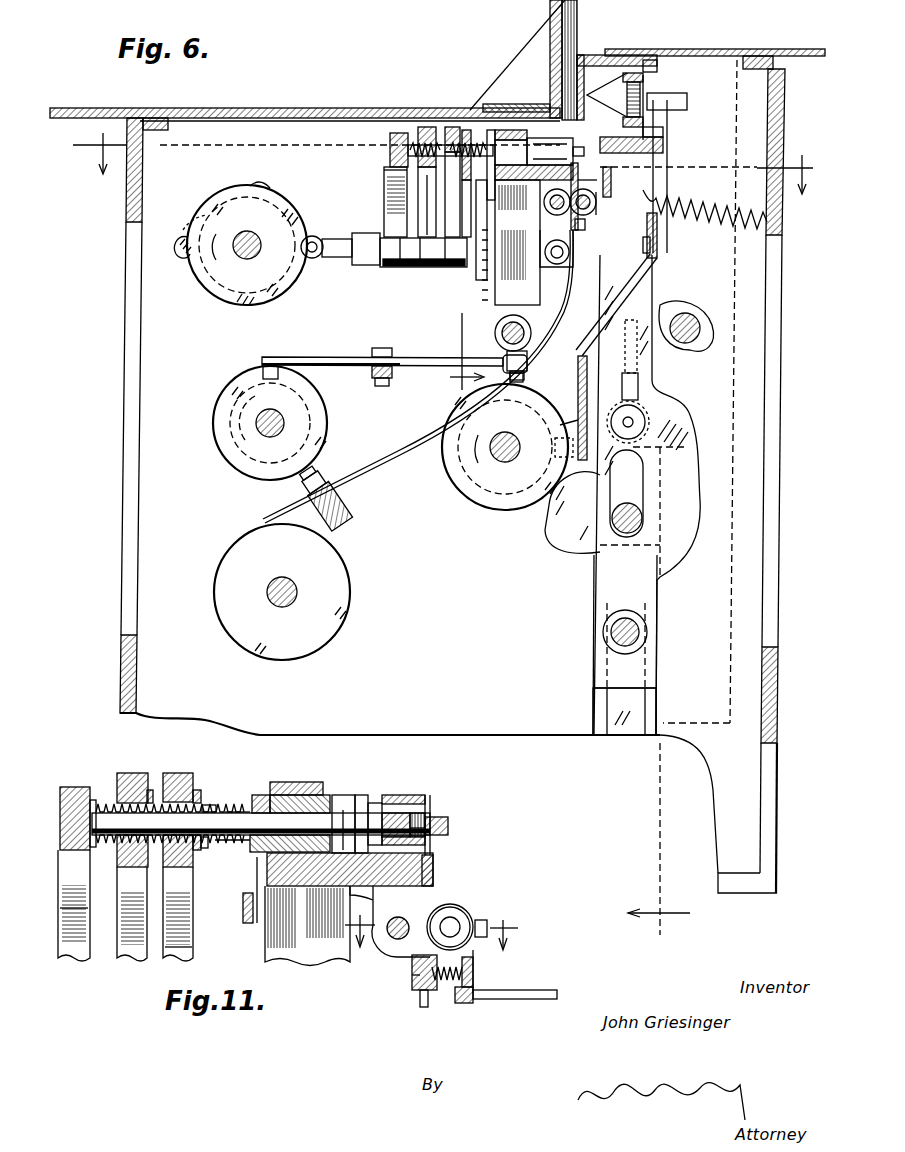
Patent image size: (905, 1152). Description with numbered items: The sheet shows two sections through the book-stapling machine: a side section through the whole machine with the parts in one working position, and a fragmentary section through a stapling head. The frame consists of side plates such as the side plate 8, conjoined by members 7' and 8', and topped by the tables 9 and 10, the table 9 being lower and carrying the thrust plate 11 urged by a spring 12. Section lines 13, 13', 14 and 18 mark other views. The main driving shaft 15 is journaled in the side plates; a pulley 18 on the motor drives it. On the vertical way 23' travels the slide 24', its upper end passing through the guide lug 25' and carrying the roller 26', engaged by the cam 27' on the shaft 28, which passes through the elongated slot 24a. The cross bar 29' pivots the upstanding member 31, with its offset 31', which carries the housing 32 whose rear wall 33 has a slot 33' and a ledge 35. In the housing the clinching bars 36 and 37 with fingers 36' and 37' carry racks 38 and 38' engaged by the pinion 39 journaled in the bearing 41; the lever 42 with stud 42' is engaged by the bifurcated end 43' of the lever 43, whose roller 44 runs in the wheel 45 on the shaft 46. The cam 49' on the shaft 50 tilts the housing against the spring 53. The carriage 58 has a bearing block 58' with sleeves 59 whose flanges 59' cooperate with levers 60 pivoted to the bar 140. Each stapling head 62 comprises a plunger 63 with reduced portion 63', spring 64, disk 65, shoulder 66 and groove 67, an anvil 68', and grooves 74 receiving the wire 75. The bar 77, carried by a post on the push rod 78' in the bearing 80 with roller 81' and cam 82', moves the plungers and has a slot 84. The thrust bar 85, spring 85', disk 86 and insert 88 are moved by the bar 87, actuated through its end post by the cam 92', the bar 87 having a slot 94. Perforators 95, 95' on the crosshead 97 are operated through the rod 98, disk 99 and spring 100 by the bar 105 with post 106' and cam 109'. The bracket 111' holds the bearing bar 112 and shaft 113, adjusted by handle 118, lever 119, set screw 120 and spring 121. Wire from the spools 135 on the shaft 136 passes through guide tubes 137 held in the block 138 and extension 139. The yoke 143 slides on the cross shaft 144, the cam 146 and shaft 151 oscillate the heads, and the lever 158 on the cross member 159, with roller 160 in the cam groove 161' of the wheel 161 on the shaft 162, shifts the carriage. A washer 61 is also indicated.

In FIG. 6, the frame member 7' is at (734, 481).
In FIG. 6, the side plate 8 is at (390, 715).
In FIG. 6, the frame member 8' is at (135, 415).
In FIG. 6, the table 9 is at (207, 114).
In FIG. 6, the table 10 is at (770, 50).
In FIG. 6, the thrust plate 11 is at (517, 55).
In FIG. 6, the spring 12 is at (682, 502).
In FIG. 6, the section line 13 is at (316, 150).
In FIG. 6, the section line 13' is at (713, 172).
In FIG. 6, the section line 14 is at (452, 351).
In FIG. 6, the main driving shaft 15 is at (254, 258).
In FIG. 11, the pulley 18 is at (438, 938).
In FIG. 6, the vertical way 23' is at (651, 708).
In FIG. 6, the slide 24' is at (652, 645).
In FIG. 6, the elongated slot 24a is at (633, 467).
In FIG. 6, the guide lug 25' is at (666, 360).
In FIG. 6, the roller 26' is at (662, 422).
In FIG. 6, the cam 27' is at (570, 516).
In FIG. 6, the shaft 28 is at (645, 518).
In FIG. 6, the cross bar 29' is at (597, 632).
In FIG. 6, the upstanding member 31 is at (647, 495).
In FIG. 6, the offset 31' is at (659, 512).
In FIG. 6, the housing 32 is at (640, 72).
In FIG. 6, the rear wall 33 is at (585, 60).
In FIG. 6, the longitudinal slot 33' is at (610, 61).
In FIG. 6, the ledge 35 is at (556, 112).
In FIG. 6, the clinching bar 36 is at (661, 68).
In FIG. 6, the clinching fingers 36' is at (617, 44).
In FIG. 6, the clinching bar 37 is at (655, 134).
In FIG. 6, the clinching fingers 37' is at (618, 182).
In FIG. 6, the rack 38 is at (671, 92).
In FIG. 6, the rack 38' is at (677, 115).
In FIG. 6, the pinion 39 is at (627, 96).
In FIG. 6, the bearing 41 is at (690, 98).
In FIG. 6, the lever 42 is at (680, 176).
In FIG. 6, the stud 42' is at (629, 242).
In FIG. 6, the lever 43 is at (600, 400).
In FIG. 6, the bifurcated end 43' is at (636, 284).
In FIG. 6, the roller 44 is at (555, 450).
In FIG. 6, the wheel 45 is at (505, 509).
In FIG. 6, the shaft 46 is at (503, 462).
In FIG. 6, the cam 49' is at (690, 318).
In FIG. 6, the shaft 50 is at (700, 328).
In FIG. 6, the spring 53 is at (738, 215).
In FIG. 6, the carriage 58 is at (534, 235).
In FIG. 11, the carriage 58 is at (307, 937).
In FIG. 6, the bearing block 58' is at (516, 103).
In FIG. 11, the bearing block 58' is at (296, 766).
In FIG. 6, the sleeve 59 is at (516, 110).
In FIG. 11, the sleeve 59 is at (300, 778).
In FIG. 11, the flange 59' is at (299, 804).
In FIG. 6, the lever 60 is at (497, 130).
In FIG. 11, the lever 60 is at (256, 795).
In FIG. 11, the washer 61 is at (208, 846).
In FIG. 6, the stapling head 62 is at (550, 151).
In FIG. 11, the plunger 63 is at (405, 800).
In FIG. 11, the reduced portion 63' is at (214, 777).
In FIG. 6, the spring 64 is at (490, 133).
In FIG. 6, the disk 65 is at (465, 192).
In FIG. 11, the disk 65 is at (198, 851).
In FIG. 11, the shoulder 66 is at (345, 795).
In FIG. 11, the groove 67 is at (432, 800).
In FIG. 6, the anvil 68' is at (585, 141).
In FIG. 11, the anvil 68' is at (455, 812).
In FIG. 11, the groove 74 is at (385, 800).
In FIG. 6, the wire 75 is at (598, 205).
In FIG. 11, the wire 75 is at (437, 871).
In FIG. 6, the bar 77 is at (466, 130).
In FIG. 11, the bar 77 is at (196, 790).
In FIG. 6, the push rod 78' is at (418, 267).
In FIG. 6, the bearing 80 is at (360, 237).
In FIG. 6, the roller 81' is at (326, 261).
In FIG. 6, the cam 82' is at (249, 312).
In FIG. 11, the slot 84 is at (166, 773).
In FIG. 6, the thrust bar 85 is at (440, 194).
In FIG. 11, the thrust bar 85 is at (237, 786).
In FIG. 6, the spring 85' is at (434, 103).
In FIG. 11, the spring 85' is at (178, 898).
In FIG. 6, the disk 86 is at (425, 127).
In FIG. 11, the disk 86 is at (150, 790).
In FIG. 6, the bar 87 is at (424, 130).
In FIG. 11, the bar 87 is at (126, 858).
In FIG. 11, the insert 88 is at (448, 825).
In FIG. 6, the cam 92' is at (186, 205).
In FIG. 6, the slot 94 is at (420, 175).
In FIG. 11, the slot 94 is at (107, 810).
In FIG. 11, the perforator 95 is at (464, 833).
In FIG. 11, the perforator 95' is at (455, 801).
In FIG. 11, the crosshead 97 is at (355, 848).
In FIG. 6, the rod 98 is at (384, 170).
In FIG. 11, the rod 98 is at (222, 843).
In FIG. 6, the disk 99 is at (392, 133).
In FIG. 11, the disk 99 is at (82, 853).
In FIG. 11, the spring 100 is at (93, 803).
In FIG. 6, the bar 105 is at (390, 149).
In FIG. 11, the bar 105 is at (63, 790).
In FIG. 6, the post 106' is at (392, 281).
In FIG. 11, the post 106' is at (60, 926).
In FIG. 6, the cam 109' is at (173, 262).
In FIG. 11, the bracket member 111' is at (404, 990).
In FIG. 6, the bearing bar 112 is at (592, 210).
In FIG. 11, the bearing bar 112 is at (460, 920).
In FIG. 6, the shaft 113 is at (551, 212).
In FIG. 11, the shaft 113 is at (393, 940).
In FIG. 11, the handle 118 is at (520, 993).
In FIG. 11, the lever 119 is at (475, 966).
In FIG. 11, the set screw 120 is at (488, 925).
In FIG. 11, the spring 121 is at (445, 982).
In FIG. 6, the spool 135 is at (350, 598).
In FIG. 6, the shaft 136 is at (280, 604).
In FIG. 6, the guide tube 137 is at (390, 462).
In FIG. 11, the guide tube 137 is at (421, 1008).
In FIG. 6, the block 138 is at (342, 532).
In FIG. 6, the extension 139 is at (581, 231).
In FIG. 11, the extension 139 is at (412, 972).
In FIG. 11, the bar 140 is at (245, 925).
In FIG. 6, the yoke 143 is at (490, 285).
In FIG. 6, the cross shaft 144 is at (495, 334).
In FIG. 6, the cam 146 is at (480, 306).
In FIG. 6, the shaft 151 is at (557, 265).
In FIG. 6, the lever 158 is at (335, 347).
In FIG. 6, the cross member 159 is at (388, 381).
In FIG. 6, the roller 160 is at (258, 372).
In FIG. 6, the wheel 161 is at (258, 426).
In FIG. 6, the cam groove 161' is at (207, 418).
In FIG. 6, the shaft 162 is at (273, 412).